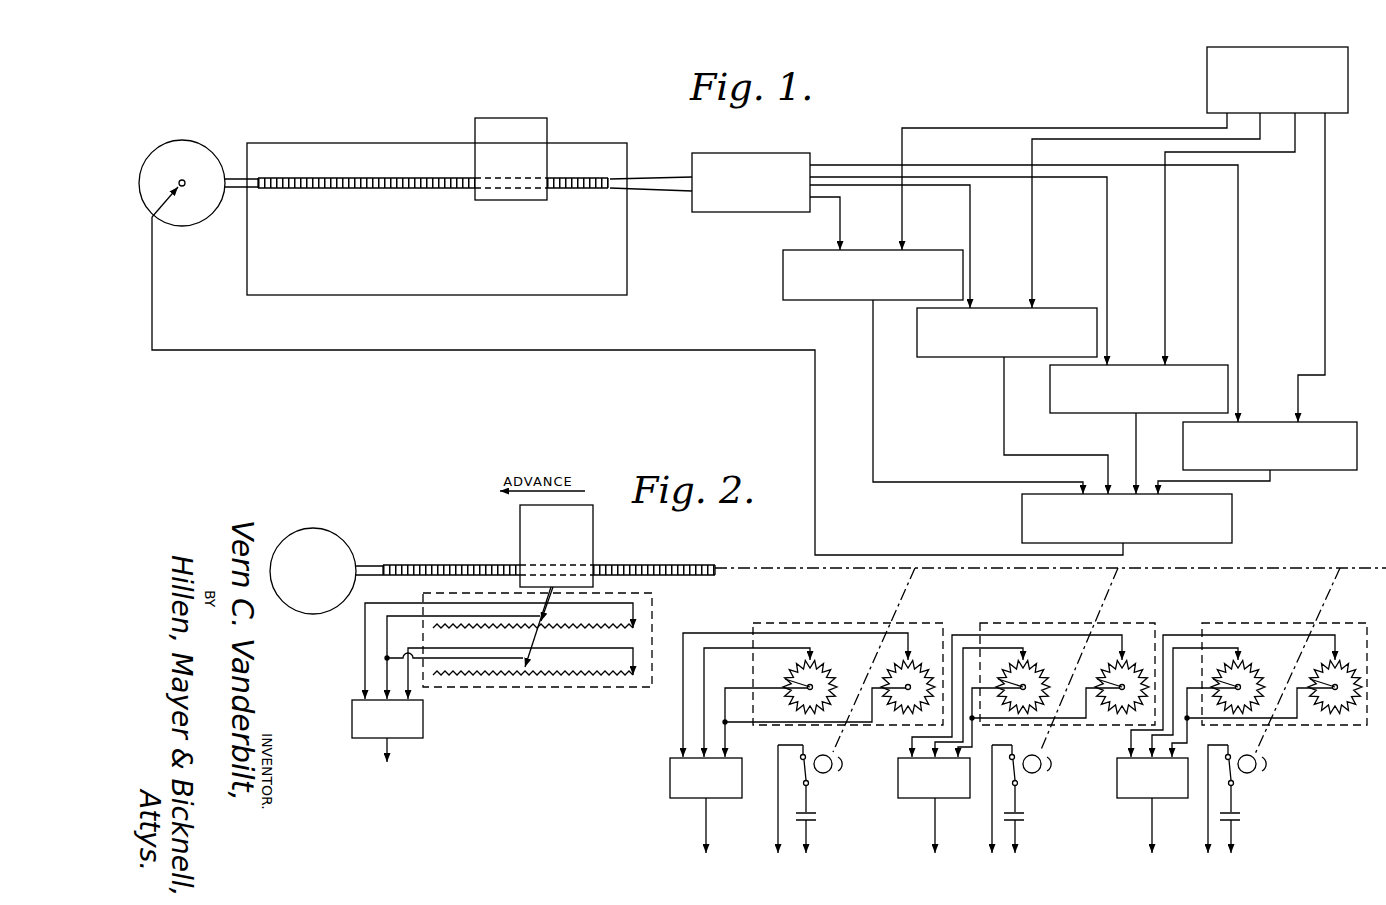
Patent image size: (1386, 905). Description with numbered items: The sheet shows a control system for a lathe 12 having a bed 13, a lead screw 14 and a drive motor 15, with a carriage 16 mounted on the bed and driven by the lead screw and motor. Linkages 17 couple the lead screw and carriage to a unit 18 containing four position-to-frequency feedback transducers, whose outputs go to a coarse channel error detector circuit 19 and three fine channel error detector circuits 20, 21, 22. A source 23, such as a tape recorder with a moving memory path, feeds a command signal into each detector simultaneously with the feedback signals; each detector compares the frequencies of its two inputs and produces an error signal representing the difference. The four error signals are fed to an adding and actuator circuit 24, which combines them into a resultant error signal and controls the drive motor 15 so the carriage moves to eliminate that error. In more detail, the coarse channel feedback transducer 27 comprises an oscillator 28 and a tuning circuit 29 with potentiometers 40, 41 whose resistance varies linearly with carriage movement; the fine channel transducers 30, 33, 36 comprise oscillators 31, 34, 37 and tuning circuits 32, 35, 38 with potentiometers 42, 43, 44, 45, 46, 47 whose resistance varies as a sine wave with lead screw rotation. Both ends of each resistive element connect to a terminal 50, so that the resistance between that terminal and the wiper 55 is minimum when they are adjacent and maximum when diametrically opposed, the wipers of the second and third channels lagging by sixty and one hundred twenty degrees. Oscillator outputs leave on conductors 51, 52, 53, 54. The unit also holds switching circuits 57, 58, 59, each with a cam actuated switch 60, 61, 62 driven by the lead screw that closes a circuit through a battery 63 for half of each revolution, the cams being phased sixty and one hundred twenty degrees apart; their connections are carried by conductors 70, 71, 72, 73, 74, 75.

In FIG. 1, the lathe 12 is at (355, 120).
In FIG. 1, the bed 13 is at (413, 143).
In FIG. 1, the lead screw 14 is at (358, 190).
In FIG. 2, the lead screw 14 is at (694, 568).
In FIG. 1, the drive motor 15 is at (198, 226).
In FIG. 2, the drive motor 15 is at (314, 529).
In FIG. 1, the carriage 16 is at (516, 118).
In FIG. 2, the carriage 16 is at (578, 549).
In FIG. 1, the linkages 17 is at (654, 187).
In FIG. 1, the unit 18 is at (716, 213).
In FIG. 1, the coarse channel error detector circuit 19 is at (783, 292).
In FIG. 1, the fine channel error detector circuit 20 is at (959, 357).
In FIG. 1, the fine channel error detector circuit 21 is at (1092, 413).
In FIG. 1, the fine channel error detector circuit 22 is at (1342, 470).
In FIG. 1, the source 23 is at (1207, 78).
In FIG. 1, the adding and actuator circuit 24 is at (1022, 517).
In FIG. 2, the feedback transducer 27 is at (461, 721).
In FIG. 2, the oscillator 28 is at (361, 741).
In FIG. 2, the tuning circuit 29 is at (564, 690).
In FIG. 2, the feedback transducer 30 is at (668, 784).
In FIG. 2, the oscillator 31 is at (668, 763).
In FIG. 2, the tuning circuit 32 is at (816, 623).
In FIG. 2, the feedback transducer 33 is at (912, 803).
In FIG. 2, the oscillator 34 is at (898, 766).
In FIG. 2, the tuning circuit 35 is at (1036, 623).
In FIG. 2, the feedback transducer 36 is at (1135, 806).
In FIG. 2, the oscillator 37 is at (1117, 784).
In FIG. 2, the tuning circuit 38 is at (1262, 623).
In FIG. 2, the potentiometer 40 is at (640, 627).
In FIG. 2, the potentiometer 41 is at (640, 678).
In FIG. 2, the potentiometer 42 is at (832, 668).
In FIG. 2, the potentiometer 43 is at (918, 663).
In FIG. 2, the potentiometer 44 is at (1037, 668).
In FIG. 2, the potentiometer 45 is at (1112, 663).
In FIG. 2, the potentiometer 46 is at (1262, 668).
In FIG. 2, the potentiometer 47 is at (1325, 663).
In FIG. 2, the terminal 50 is at (805, 663).
In FIG. 2, the conductor 51 is at (391, 752).
In FIG. 2, the conductor 52 is at (705, 823).
In FIG. 2, the conductor 53 is at (935, 831).
In FIG. 2, the conductor 54 is at (1152, 839).
In FIG. 2, the wiper 55 is at (790, 689).
In FIG. 2, the switching circuit 57 is at (770, 801).
In FIG. 2, the switching circuit 58 is at (985, 801).
In FIG. 2, the switching circuit 59 is at (1262, 788).
In FIG. 2, the switch 60 is at (826, 783).
In FIG. 2, the switch 61 is at (1045, 781).
In FIG. 2, the switch 62 is at (1262, 771).
In FIG. 2, the battery 63 is at (813, 819).
In FIG. 2, the conductor 70 is at (778, 835).
In FIG. 2, the conductor 71 is at (812, 845).
In FIG. 2, the conductor 72 is at (992, 841).
In FIG. 2, the conductor 73 is at (1020, 845).
In FIG. 2, the conductor 74 is at (1208, 839).
In FIG. 2, the conductor 75 is at (1236, 839).